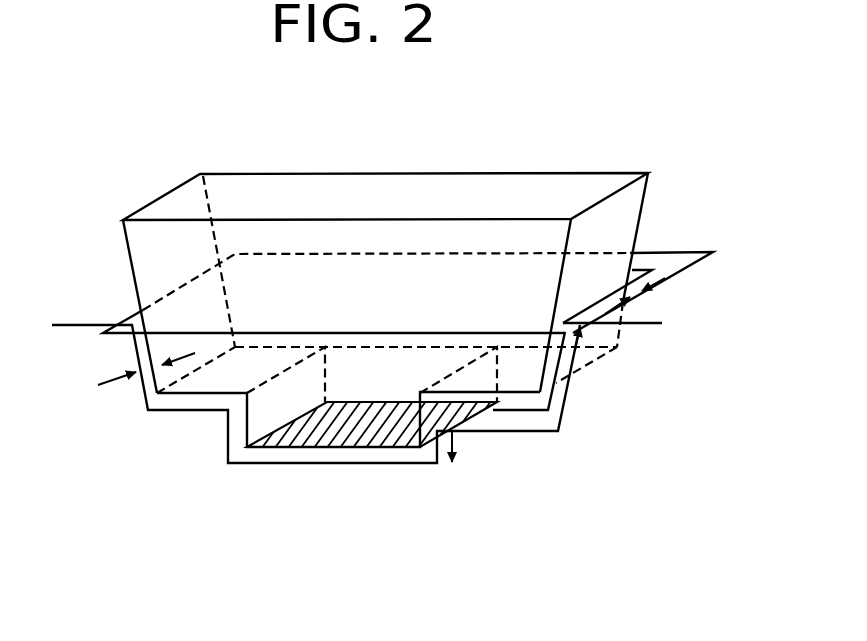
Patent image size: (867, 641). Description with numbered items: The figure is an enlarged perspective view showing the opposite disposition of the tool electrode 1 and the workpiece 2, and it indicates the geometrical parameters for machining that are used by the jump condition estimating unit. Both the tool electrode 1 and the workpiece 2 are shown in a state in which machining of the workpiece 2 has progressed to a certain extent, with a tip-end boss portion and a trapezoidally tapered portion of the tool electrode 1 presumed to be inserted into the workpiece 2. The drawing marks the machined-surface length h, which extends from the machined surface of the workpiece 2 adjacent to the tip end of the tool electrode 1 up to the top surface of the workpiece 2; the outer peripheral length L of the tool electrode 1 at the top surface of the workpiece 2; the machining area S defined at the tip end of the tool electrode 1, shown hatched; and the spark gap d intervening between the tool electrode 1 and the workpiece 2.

The tool electrode 1 is at (334, 190).
The workpiece 2 is at (198, 443).
The machining area S is at (347, 420).
The spark gap d is at (140, 368).
The outer peripheral length L is at (645, 294).
The machined-surface length h is at (517, 395).